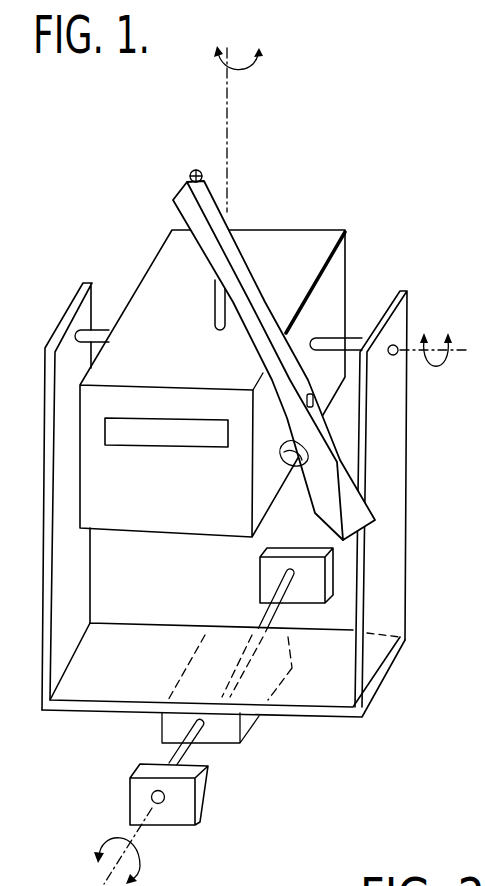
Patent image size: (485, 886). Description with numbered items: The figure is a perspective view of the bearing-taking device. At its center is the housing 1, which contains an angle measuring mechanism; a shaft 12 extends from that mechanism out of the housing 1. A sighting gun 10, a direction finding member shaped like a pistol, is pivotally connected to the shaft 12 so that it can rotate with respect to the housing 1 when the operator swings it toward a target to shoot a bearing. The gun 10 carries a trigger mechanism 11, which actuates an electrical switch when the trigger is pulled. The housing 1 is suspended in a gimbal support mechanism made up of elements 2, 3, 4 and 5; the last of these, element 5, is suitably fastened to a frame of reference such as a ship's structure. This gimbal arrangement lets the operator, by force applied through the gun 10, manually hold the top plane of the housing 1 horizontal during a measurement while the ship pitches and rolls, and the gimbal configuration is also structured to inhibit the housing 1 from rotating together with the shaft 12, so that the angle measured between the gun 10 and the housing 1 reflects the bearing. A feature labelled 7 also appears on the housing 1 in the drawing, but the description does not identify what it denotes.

The housing 1 is at (321, 243).
The gimbal support element 2 is at (348, 342).
The gimbal support element 3 is at (48, 522).
The gimbal support element 4 is at (187, 748).
The gimbal support element 5 is at (185, 807).
The slot 7 is at (165, 437).
The sighting gun 10 is at (225, 185).
The trigger mechanism 11 is at (290, 460).
The shaft 12 is at (214, 312).